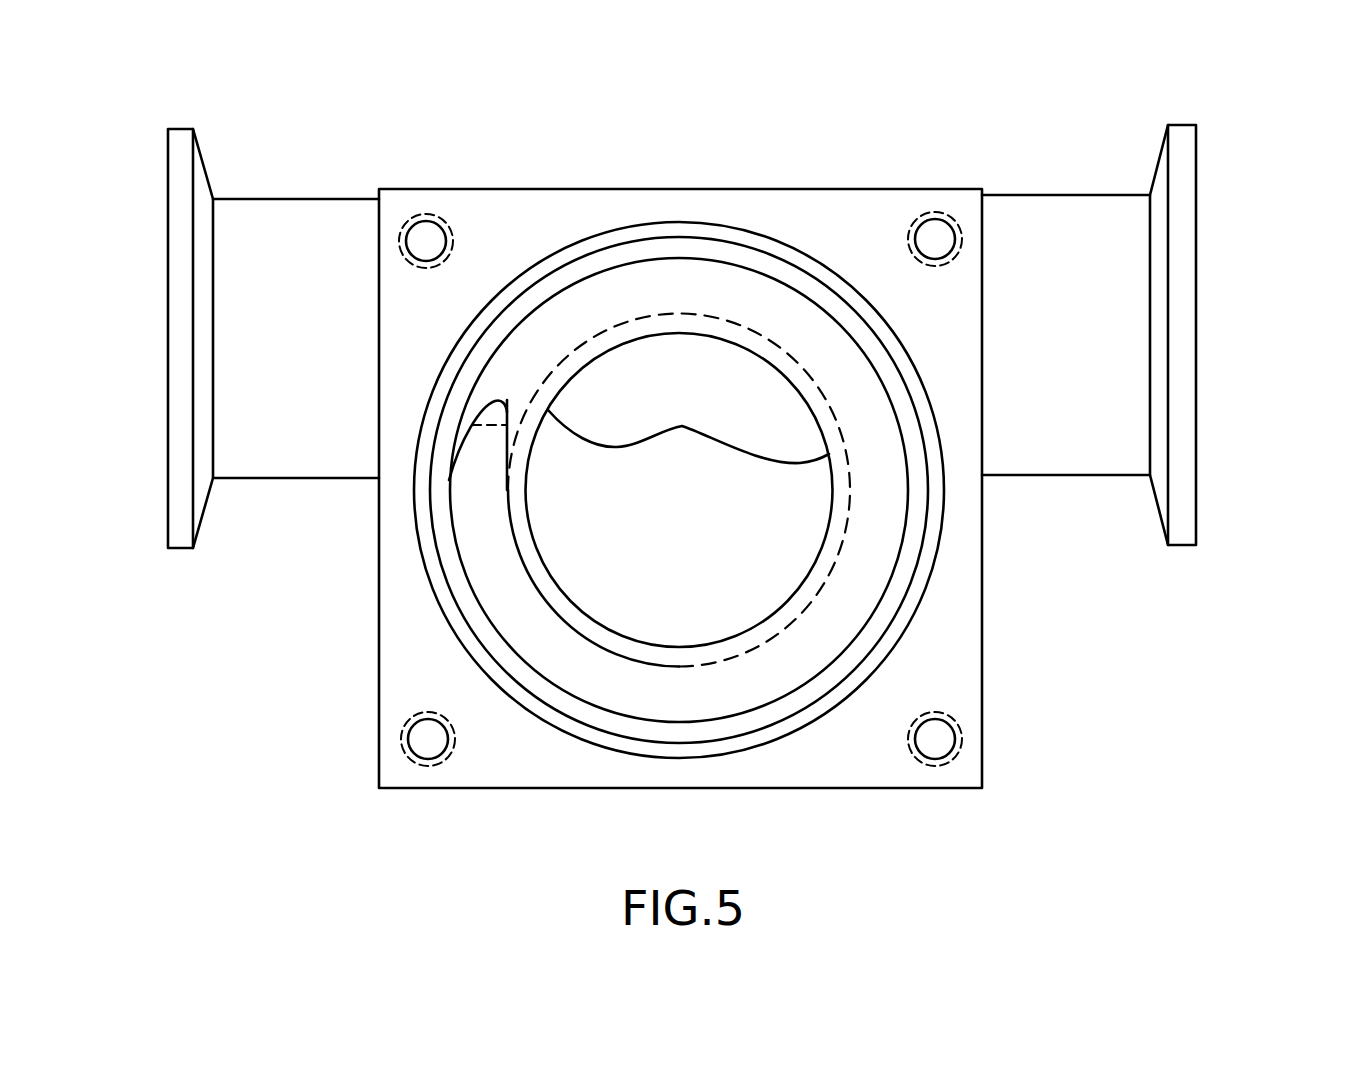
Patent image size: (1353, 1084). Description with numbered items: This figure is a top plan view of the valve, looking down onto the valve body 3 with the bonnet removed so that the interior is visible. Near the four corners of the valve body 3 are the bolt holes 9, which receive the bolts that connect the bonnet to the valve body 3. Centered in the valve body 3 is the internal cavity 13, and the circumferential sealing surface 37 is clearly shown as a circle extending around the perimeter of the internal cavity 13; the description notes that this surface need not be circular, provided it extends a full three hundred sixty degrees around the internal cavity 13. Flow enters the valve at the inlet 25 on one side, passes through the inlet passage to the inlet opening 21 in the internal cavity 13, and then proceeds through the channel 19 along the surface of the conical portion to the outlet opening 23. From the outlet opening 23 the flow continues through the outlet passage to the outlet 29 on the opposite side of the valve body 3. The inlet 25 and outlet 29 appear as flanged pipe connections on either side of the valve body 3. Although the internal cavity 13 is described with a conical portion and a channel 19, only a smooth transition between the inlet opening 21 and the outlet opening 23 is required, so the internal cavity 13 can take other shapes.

The valve body 3 is at (703, 463).
The bolt holes 9 is at (418, 230).
The internal cavity 13 is at (703, 615).
The channel 19 is at (468, 513).
The inlet opening 21 is at (497, 409).
The outlet opening 23 is at (727, 424).
The inlet 25 is at (168, 330).
The outlet 29 is at (1157, 335).
The circumferential sealing surface 37 is at (843, 562).